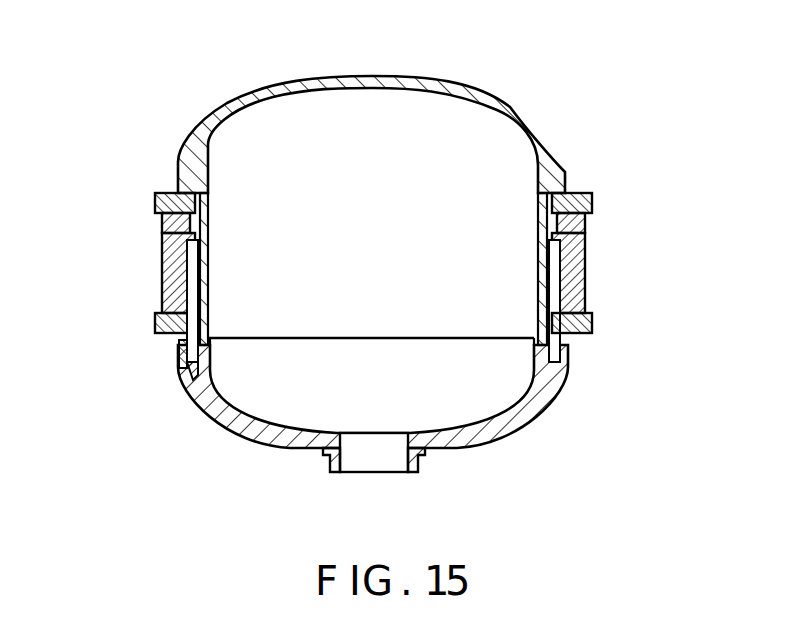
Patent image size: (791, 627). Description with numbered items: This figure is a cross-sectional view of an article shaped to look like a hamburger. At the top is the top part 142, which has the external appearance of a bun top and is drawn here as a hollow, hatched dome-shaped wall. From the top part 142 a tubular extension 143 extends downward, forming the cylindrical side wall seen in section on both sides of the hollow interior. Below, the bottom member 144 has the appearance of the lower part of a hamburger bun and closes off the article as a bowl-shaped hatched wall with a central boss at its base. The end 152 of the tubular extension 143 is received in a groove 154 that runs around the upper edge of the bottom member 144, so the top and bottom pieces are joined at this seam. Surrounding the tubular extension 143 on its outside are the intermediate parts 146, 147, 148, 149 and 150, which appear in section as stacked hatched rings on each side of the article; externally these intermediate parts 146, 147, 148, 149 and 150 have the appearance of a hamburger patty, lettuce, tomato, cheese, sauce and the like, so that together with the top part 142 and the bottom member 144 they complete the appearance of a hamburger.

The top part 142 is at (498, 114).
The tubular extension 143 is at (210, 248).
The bottom member 144 is at (250, 422).
The intermediate part 146 is at (590, 200).
The intermediate part 147 is at (586, 218).
The intermediate part 148 is at (585, 230).
The intermediate part 149 is at (163, 257).
The intermediate part 150 is at (593, 313).
The end of tubular extension 152 is at (193, 378).
The groove 154 is at (180, 348).